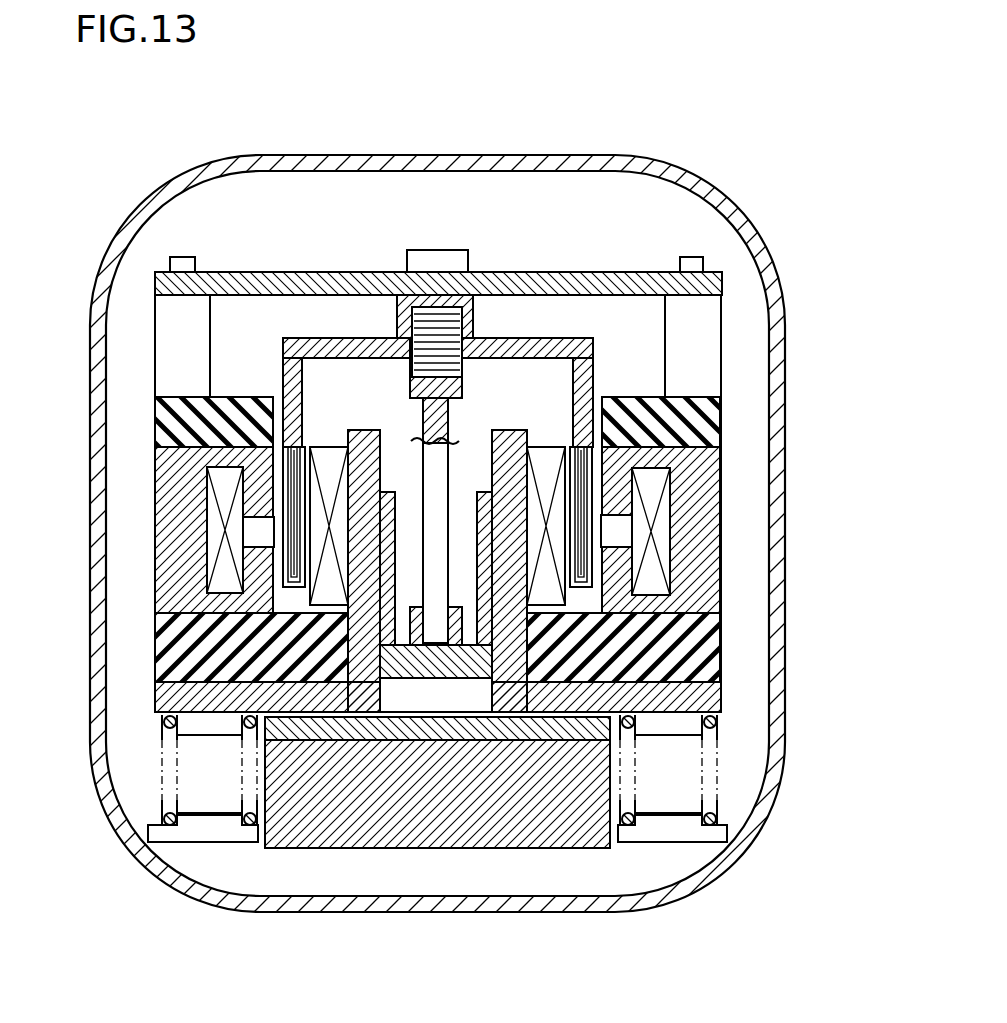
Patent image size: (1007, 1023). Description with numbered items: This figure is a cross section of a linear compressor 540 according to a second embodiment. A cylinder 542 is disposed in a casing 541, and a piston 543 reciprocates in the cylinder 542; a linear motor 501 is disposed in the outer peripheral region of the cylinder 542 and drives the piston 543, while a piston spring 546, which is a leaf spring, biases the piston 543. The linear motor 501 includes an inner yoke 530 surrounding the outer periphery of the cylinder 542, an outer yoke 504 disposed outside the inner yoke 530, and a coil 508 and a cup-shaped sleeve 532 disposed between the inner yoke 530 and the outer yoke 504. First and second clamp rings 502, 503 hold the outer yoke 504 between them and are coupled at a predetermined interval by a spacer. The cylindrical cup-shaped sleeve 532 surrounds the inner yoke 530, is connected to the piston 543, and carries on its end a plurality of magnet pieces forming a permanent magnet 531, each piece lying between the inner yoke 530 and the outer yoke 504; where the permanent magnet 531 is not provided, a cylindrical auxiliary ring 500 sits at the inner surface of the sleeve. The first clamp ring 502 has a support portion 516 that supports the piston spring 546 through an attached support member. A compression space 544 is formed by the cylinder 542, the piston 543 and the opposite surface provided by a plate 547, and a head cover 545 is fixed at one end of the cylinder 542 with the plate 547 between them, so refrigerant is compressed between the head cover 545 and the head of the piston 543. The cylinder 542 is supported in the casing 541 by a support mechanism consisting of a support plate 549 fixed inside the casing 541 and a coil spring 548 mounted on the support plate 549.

The linear compressor 540 is at (750, 117).
The casing 541 is at (771, 612).
The support portion 516 is at (175, 312).
The piston spring 546 is at (567, 283).
The linear motor 501 is at (258, 355).
The cup-shaped sleeve 532 is at (357, 338).
The compression space 544 is at (437, 700).
The inner yoke 530 is at (348, 602).
The permanent magnet 531 is at (283, 522).
The coil 508 is at (287, 513).
The piston 543 is at (572, 523).
The first clamp ring 502 is at (163, 408).
The outer yoke 504 is at (180, 470).
The second clamp ring 503 is at (165, 657).
The cylinder 542 is at (167, 700).
The auxiliary ring 500 is at (283, 385).
The plate 547 is at (352, 738).
The head cover 545 is at (495, 800).
The coil spring 548 is at (717, 760).
The support plate 549 is at (660, 830).